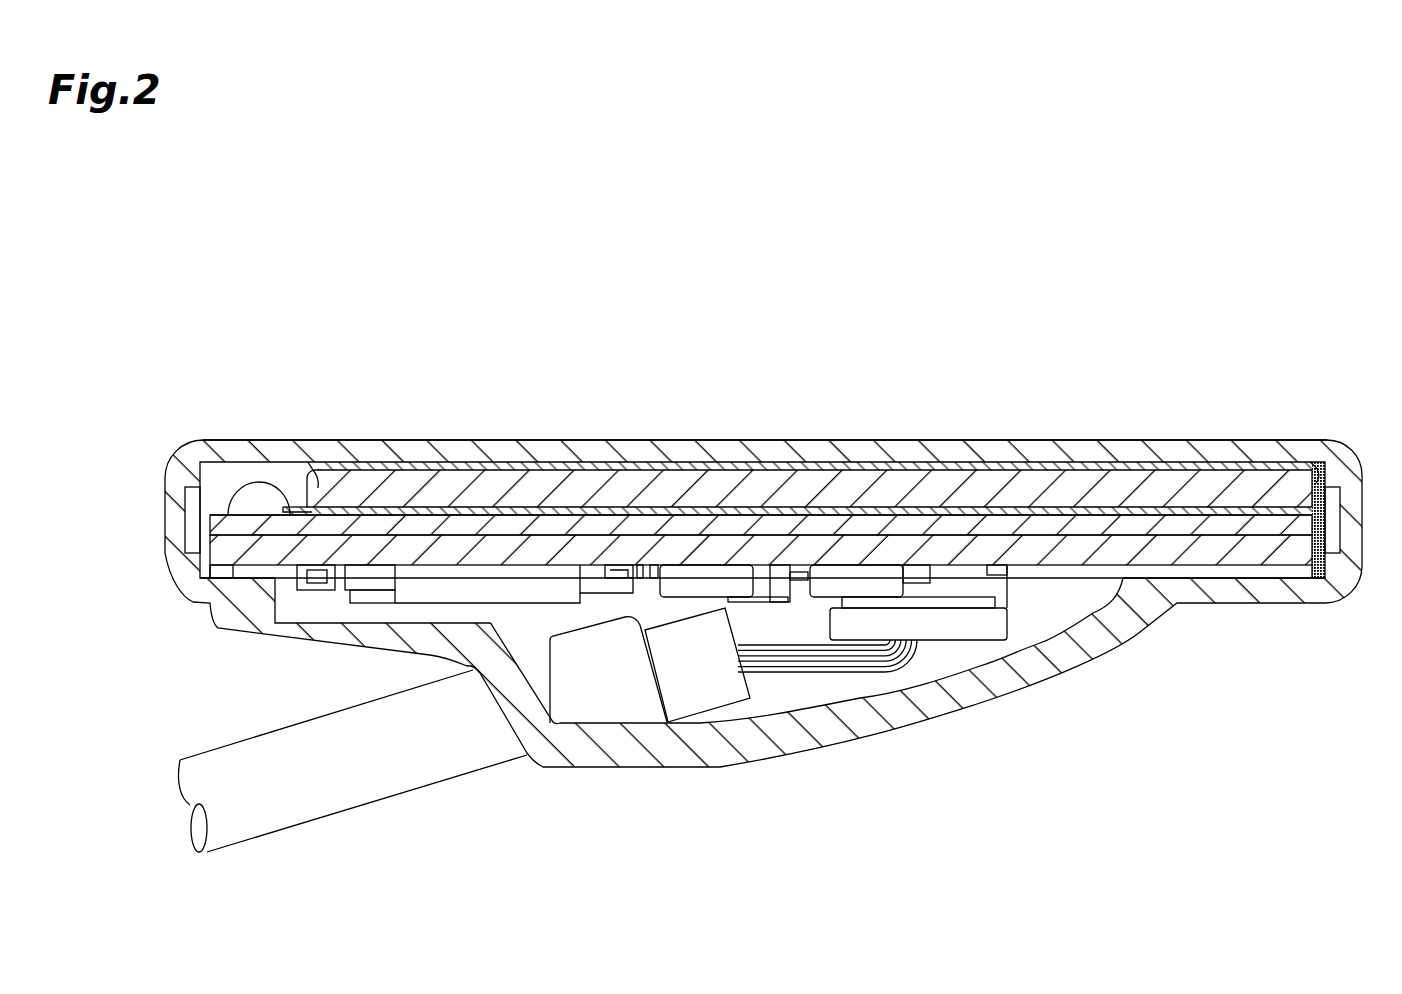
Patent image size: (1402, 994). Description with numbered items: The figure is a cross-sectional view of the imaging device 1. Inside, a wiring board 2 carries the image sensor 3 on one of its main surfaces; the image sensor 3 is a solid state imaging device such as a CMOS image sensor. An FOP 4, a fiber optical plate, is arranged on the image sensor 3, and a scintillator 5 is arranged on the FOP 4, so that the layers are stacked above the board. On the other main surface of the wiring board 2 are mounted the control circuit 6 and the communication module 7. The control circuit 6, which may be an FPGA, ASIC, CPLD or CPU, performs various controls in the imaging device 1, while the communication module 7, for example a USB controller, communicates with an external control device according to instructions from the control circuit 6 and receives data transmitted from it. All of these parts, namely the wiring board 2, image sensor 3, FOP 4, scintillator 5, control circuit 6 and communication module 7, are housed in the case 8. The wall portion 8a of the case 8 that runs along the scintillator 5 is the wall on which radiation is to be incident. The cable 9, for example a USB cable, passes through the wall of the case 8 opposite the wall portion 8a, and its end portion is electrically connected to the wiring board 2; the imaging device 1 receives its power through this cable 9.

The imaging device 1 is at (1210, 312).
The wiring board 2 is at (1072, 548).
The image sensor 3 is at (760, 510).
The FOP 4 is at (538, 490).
The scintillator 5 is at (1152, 468).
The control circuit 6 is at (537, 587).
The communication module 7 is at (693, 580).
The case 8 is at (411, 450).
The wall portion 8a is at (983, 440).
The cable 9 is at (410, 753).